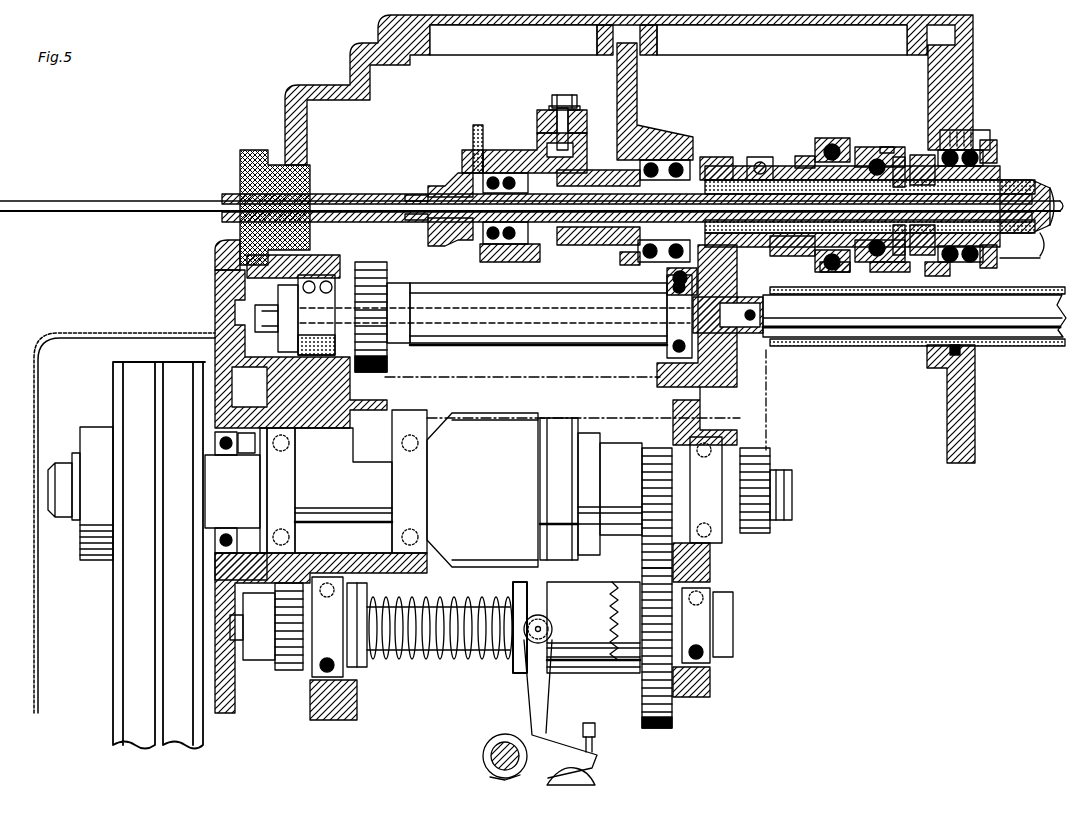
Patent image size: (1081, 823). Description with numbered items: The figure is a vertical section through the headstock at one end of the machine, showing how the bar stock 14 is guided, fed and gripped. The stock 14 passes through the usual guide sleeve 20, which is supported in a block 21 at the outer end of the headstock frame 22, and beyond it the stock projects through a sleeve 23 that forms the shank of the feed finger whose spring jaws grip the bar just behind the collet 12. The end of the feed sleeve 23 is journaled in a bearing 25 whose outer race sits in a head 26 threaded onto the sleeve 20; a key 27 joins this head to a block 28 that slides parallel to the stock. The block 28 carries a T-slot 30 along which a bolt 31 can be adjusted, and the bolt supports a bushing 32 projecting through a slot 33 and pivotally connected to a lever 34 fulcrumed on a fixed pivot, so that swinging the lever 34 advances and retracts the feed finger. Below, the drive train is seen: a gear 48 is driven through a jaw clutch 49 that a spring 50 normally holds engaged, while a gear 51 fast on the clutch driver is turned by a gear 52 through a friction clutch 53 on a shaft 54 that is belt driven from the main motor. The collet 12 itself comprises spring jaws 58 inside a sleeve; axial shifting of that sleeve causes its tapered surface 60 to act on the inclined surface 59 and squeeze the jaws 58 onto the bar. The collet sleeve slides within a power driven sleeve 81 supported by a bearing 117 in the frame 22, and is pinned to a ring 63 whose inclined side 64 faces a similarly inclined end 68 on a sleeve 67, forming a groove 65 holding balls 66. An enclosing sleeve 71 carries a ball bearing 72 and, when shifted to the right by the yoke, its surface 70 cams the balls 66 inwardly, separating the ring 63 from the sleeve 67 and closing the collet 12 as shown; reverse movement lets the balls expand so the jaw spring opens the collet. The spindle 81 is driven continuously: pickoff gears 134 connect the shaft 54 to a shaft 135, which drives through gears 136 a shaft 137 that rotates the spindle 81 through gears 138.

The collet 12 is at (1028, 258).
The stock 14 is at (124, 206).
The guide sleeve 20 is at (374, 195).
The block 21 is at (246, 172).
The headstock frame 22 is at (285, 113).
The feed sleeve 23 is at (549, 232).
The bearing 25 is at (500, 252).
The head 26 is at (450, 246).
The key 27 is at (473, 135).
The block 28 is at (462, 150).
The T-slot 30 is at (537, 145).
The bolt 31 is at (563, 95).
The bushing 32 is at (537, 126).
The slot 33 is at (550, 107).
The lever 34 is at (584, 114).
The gear 48 is at (292, 670).
The jaw clutch 49 is at (598, 668).
The spring 50 is at (418, 662).
The gear 51 is at (672, 718).
The gear 52 is at (655, 446).
The friction clutch 53 is at (516, 412).
The shaft 54 is at (328, 458).
The spring jaws 58 is at (1058, 232).
The inclined surface 59 is at (1040, 180).
The tapered surface 60 is at (1058, 190).
The ring 63 is at (927, 274).
The inclined side 64 is at (890, 274).
The groove 65 is at (876, 160).
The balls 66 is at (885, 146).
The sleeve 67 is at (823, 274).
The inclined end 68 is at (918, 156).
The surface 70 is at (898, 156).
The sleeve 71 is at (815, 156).
The ball bearing 72 is at (830, 148).
The power driven sleeve 81 is at (810, 256).
The bearing 117 is at (955, 140).
The pickoff gears 134 is at (790, 440).
The shaft 135 is at (560, 380).
The gears 136 is at (388, 360).
The shaft 137 is at (1018, 346).
The gears 138 is at (724, 158).